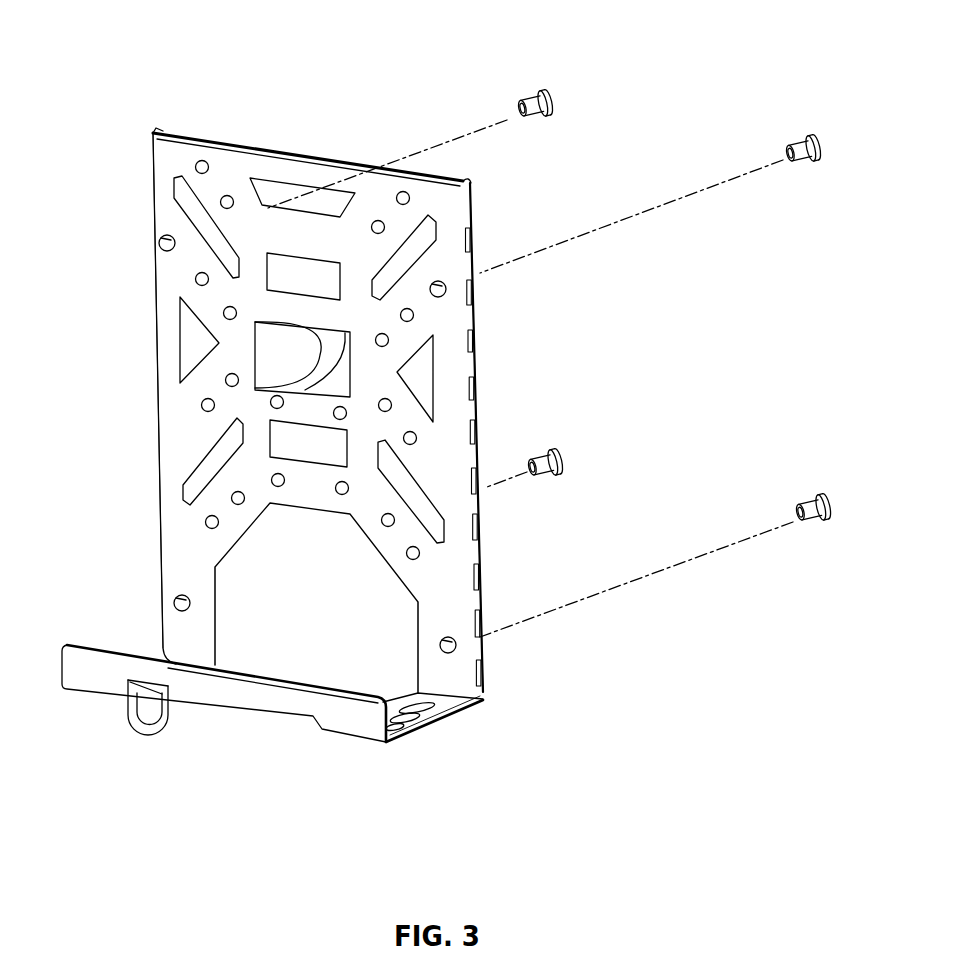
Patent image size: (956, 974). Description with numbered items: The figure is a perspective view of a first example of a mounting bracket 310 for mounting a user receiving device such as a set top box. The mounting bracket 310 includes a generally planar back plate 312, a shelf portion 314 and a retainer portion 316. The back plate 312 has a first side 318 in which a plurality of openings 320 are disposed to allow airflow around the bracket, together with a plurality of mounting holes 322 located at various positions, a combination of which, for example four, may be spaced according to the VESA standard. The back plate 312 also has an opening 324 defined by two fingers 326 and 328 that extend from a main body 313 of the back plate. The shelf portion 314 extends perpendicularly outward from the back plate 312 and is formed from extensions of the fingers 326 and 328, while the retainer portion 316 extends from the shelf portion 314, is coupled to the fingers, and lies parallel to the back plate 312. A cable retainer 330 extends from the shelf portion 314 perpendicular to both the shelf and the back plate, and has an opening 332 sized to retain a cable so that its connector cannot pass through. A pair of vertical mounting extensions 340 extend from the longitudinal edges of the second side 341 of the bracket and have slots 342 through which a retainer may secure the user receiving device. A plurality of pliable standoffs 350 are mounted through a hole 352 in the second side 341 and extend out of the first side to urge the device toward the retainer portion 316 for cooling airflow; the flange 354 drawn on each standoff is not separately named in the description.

The bracket assembly 310 is at (447, 396).
The first side edge 312 is at (150, 166).
The front panel 313 is at (320, 244).
The bottom flange 314 is at (455, 703).
The base flange 316 is at (73, 662).
The top edge 318 is at (377, 186).
The cutouts 320 is at (183, 200).
The holes 322 is at (228, 310).
The raised central region 324 is at (313, 620).
The right lower region 326 is at (445, 608).
The left lower region 328 is at (175, 548).
The tab 330 is at (147, 728).
The tab opening 332 is at (135, 718).
The side flange 340 is at (469, 181).
The top flange 341 is at (270, 152).
The fold line 342 is at (474, 385).
The rivet nut 350 is at (574, 342).
The mounting holes 352 is at (159, 243).
The rivet nut flange 354 is at (556, 100).